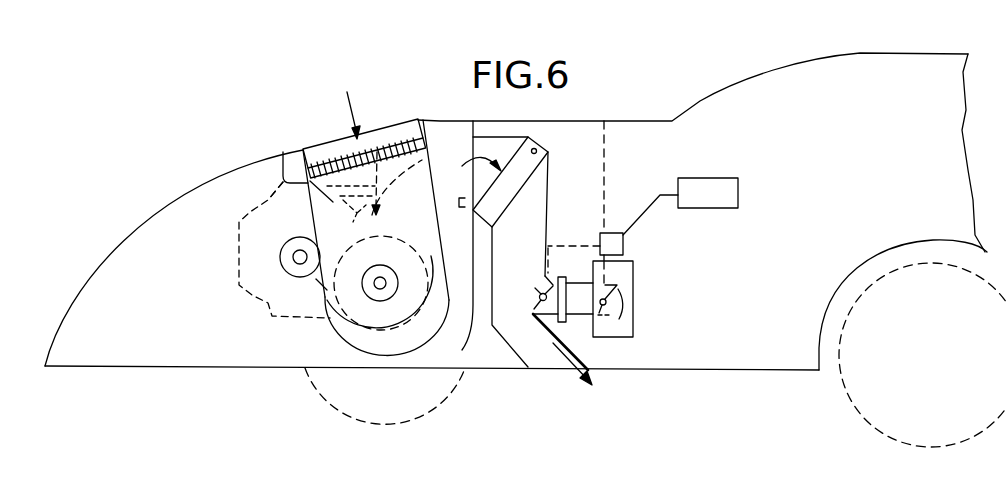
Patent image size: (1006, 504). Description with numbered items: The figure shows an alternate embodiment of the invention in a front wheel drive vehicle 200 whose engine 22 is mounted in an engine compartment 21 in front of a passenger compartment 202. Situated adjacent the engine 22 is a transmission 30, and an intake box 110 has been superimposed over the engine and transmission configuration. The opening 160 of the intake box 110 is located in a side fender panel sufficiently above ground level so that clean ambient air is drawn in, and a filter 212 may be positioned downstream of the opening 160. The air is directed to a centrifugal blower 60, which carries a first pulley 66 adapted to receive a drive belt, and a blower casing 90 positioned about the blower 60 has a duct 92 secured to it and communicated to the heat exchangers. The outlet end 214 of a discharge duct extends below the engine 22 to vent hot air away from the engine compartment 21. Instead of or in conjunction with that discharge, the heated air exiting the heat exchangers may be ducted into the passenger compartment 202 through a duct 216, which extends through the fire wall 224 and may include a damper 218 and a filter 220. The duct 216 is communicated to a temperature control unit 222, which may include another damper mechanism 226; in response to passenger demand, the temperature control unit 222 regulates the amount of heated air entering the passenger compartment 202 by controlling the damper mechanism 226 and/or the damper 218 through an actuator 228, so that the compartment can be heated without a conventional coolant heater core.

The front wheel drive vehicle 200 is at (211, 176).
The passenger compartment 202 is at (811, 167).
The engine compartment 21 is at (212, 262).
The engine 22 is at (266, 200).
The intake box 110 is at (287, 166).
The opening of the inlet box 160 is at (328, 142).
The filter 212 is at (367, 143).
The transmission 30 is at (357, 223).
The first pulley 66 is at (379, 269).
The centrifugal fan or blower 60 is at (358, 330).
The blower casing 90 is at (453, 324).
The duct 92 is at (467, 188).
The outlet end of duct 214 is at (518, 370).
The duct 216 is at (537, 319).
The damper 218 is at (539, 295).
The filter 220 is at (636, 288).
The damper mechanism 226 is at (640, 301).
The actuator 228 is at (626, 245).
The fire wall 224 is at (608, 163).
The temperature control unit 222 is at (740, 197).